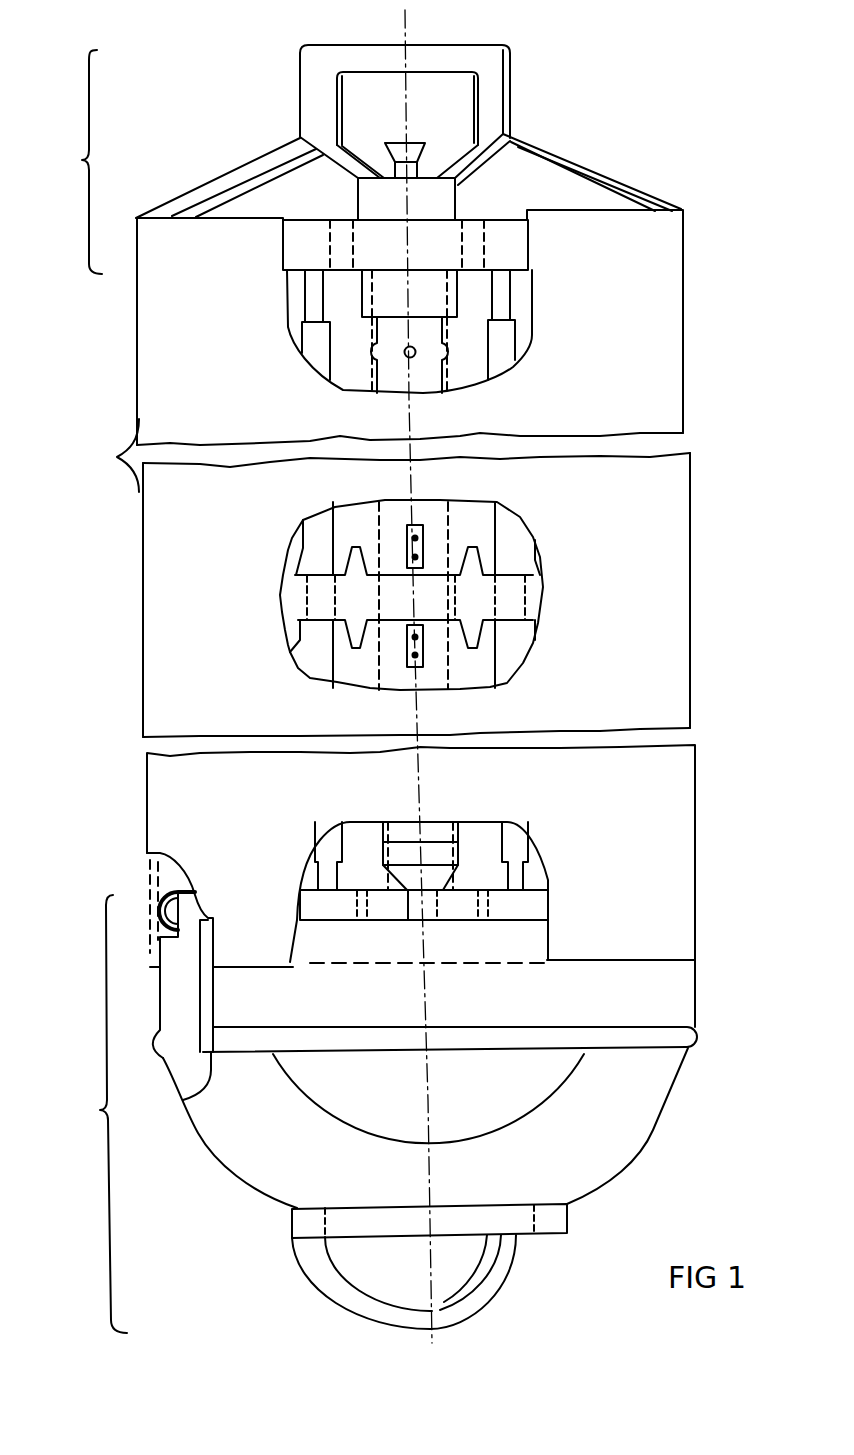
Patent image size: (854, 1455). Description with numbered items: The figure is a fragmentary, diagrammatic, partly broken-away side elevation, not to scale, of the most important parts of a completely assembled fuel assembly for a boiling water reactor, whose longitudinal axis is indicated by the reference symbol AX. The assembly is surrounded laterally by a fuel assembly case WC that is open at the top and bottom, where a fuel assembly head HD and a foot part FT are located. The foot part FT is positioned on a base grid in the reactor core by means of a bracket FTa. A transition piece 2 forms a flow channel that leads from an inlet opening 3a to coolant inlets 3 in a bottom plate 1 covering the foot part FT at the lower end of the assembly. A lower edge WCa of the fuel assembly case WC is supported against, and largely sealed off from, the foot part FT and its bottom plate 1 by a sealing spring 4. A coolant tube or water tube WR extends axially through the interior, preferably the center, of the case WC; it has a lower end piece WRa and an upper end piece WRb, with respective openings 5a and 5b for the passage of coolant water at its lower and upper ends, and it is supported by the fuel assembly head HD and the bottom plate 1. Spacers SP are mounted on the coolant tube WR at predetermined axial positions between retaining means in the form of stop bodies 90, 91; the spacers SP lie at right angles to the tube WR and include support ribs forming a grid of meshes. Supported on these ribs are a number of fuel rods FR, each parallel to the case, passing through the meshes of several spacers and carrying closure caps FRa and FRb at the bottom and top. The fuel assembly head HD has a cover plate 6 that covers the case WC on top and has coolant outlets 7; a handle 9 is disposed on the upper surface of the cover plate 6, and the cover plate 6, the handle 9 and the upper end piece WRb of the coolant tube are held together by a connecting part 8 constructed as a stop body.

The longitudinal axis AX is at (406, 38).
The fuel assembly head HD is at (360, 162).
The handle 9 is at (360, 58).
The fuel assembly case WC is at (386, 618).
The connecting part 8 is at (370, 203).
The coolant outlets 7 is at (472, 220).
The cover plate 6 is at (507, 242).
The upper closure cap FRb is at (503, 292).
The upper end piece WRb is at (362, 318).
The upper opening 5b is at (413, 357).
The spacers SP is at (480, 588).
The stop body 90 is at (423, 545).
The stop body 91 is at (410, 650).
The coolant tube WR is at (433, 672).
The fuel rods FR is at (513, 675).
The bottom plate 1 is at (527, 903).
The lower end piece WRa is at (400, 853).
The lower closure cap FRa is at (517, 875).
The lower opening 5a is at (432, 922).
The coolant inlets 3 is at (360, 923).
The sealing spring 4 is at (165, 895).
The lower edge WCa is at (150, 958).
The foot part FT is at (379, 1114).
The transition piece 2 is at (619, 1118).
The inlet opening 3a is at (525, 1236).
The bracket FTa is at (346, 1287).